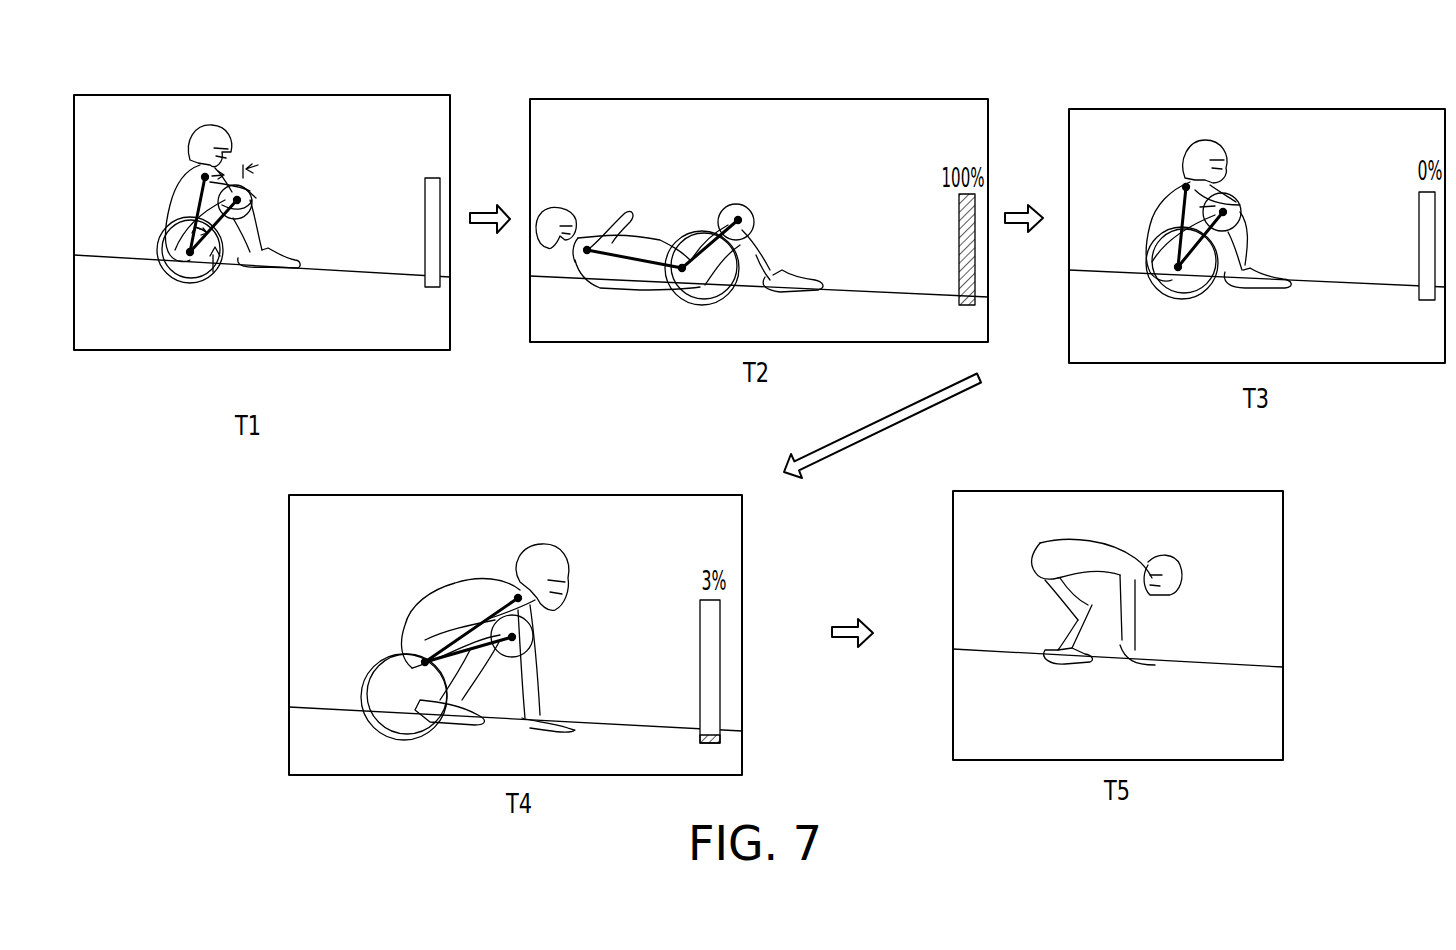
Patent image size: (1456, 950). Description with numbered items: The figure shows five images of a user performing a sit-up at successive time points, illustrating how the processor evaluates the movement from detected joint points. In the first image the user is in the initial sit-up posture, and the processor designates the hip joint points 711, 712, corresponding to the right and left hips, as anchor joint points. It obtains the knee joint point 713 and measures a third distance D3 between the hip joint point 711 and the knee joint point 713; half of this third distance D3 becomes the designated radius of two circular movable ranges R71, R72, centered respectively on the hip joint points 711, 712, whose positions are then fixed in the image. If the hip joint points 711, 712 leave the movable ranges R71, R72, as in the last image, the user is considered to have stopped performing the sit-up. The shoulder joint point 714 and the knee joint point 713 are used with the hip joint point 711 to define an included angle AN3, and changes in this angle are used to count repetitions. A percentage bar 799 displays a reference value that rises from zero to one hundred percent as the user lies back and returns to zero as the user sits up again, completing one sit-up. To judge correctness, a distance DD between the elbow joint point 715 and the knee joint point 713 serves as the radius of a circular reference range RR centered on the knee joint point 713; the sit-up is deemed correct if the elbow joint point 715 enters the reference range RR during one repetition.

The hip joint point 711 is at (189, 287).
The hip joint point 712 is at (174, 278).
The knee joint point 713 is at (230, 252).
The shoulder joint point 714 is at (204, 176).
The elbow joint point 715 is at (252, 190).
The percentage bar 799 is at (424, 194).
The distance DD is at (233, 166).
The reference range RR is at (253, 208).
The included angle AN3 is at (162, 201).
The movable range R71 is at (160, 268).
The movable range R72 is at (160, 233).
The third distance D3 is at (213, 277).